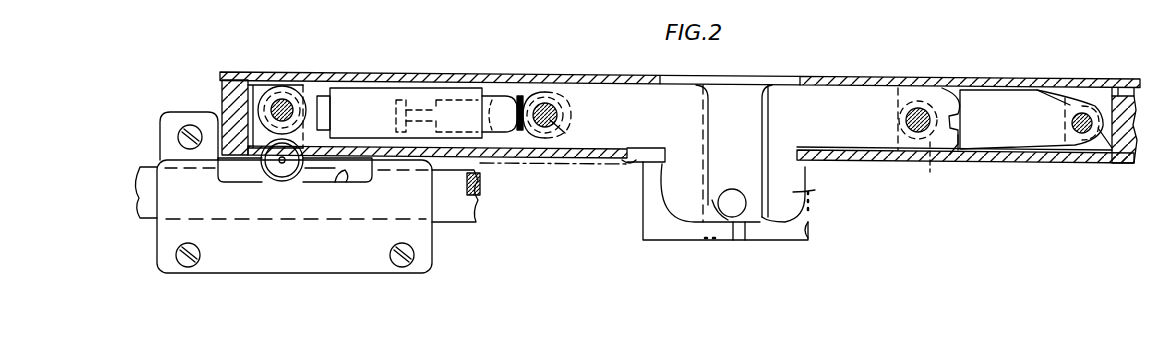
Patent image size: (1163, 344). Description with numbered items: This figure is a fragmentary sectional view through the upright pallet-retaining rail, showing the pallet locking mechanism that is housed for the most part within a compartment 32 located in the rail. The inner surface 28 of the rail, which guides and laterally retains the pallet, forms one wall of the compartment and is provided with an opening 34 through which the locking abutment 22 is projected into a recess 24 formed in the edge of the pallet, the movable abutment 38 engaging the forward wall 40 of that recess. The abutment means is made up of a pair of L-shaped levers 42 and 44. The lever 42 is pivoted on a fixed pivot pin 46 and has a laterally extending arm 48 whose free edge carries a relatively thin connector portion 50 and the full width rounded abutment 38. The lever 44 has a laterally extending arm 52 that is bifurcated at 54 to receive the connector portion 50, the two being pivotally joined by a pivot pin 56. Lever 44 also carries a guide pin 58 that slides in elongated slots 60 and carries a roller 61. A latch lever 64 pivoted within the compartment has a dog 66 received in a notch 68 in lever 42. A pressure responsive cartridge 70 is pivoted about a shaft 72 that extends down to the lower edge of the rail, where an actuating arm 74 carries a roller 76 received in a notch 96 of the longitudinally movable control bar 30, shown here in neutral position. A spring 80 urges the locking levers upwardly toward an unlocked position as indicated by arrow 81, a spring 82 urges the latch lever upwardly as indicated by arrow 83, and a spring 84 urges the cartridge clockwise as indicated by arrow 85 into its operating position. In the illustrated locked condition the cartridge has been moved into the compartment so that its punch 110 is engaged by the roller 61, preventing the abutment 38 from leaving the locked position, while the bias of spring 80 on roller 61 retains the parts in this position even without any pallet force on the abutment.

The locking abutment 22 is at (678, 236).
The recess 24 is at (700, 242).
The inner surface 28 is at (1050, 165).
The control bar 30 is at (462, 216).
The compartment 32 is at (1106, 92).
The opening 34 is at (642, 166).
The movable abutment 38 is at (815, 190).
The forward wall 40 is at (806, 226).
The L-shaped lever 42 is at (824, 102).
The L-shaped lever 44 is at (593, 90).
The pivot pin 46 is at (918, 108).
The laterally extending arm 48 is at (748, 234).
The connector portion 50 is at (758, 108).
The laterally extending arm 52 is at (665, 200).
The bifurcated portion 54 is at (704, 130).
The pivot pin 56 is at (733, 190).
The guide pin 58 is at (560, 122).
The slots 60 is at (568, 108).
The roller 61 is at (516, 158).
The latch lever 64 is at (996, 135).
The dog 66 is at (960, 156).
The notch 68 is at (950, 120).
The pressure responsive cartridge 70 is at (372, 102).
The shaft 72 is at (287, 106).
The actuating arm 74 is at (270, 182).
The roller 76 is at (305, 183).
The spring 80 is at (930, 167).
The arrow 81 is at (760, 74).
The spring 82 is at (1090, 163).
The arrow 83 is at (1000, 74).
The spring 84 is at (258, 100).
The arrow 85 is at (352, 36).
The notch 96 is at (343, 180).
The punch 110 is at (500, 105).